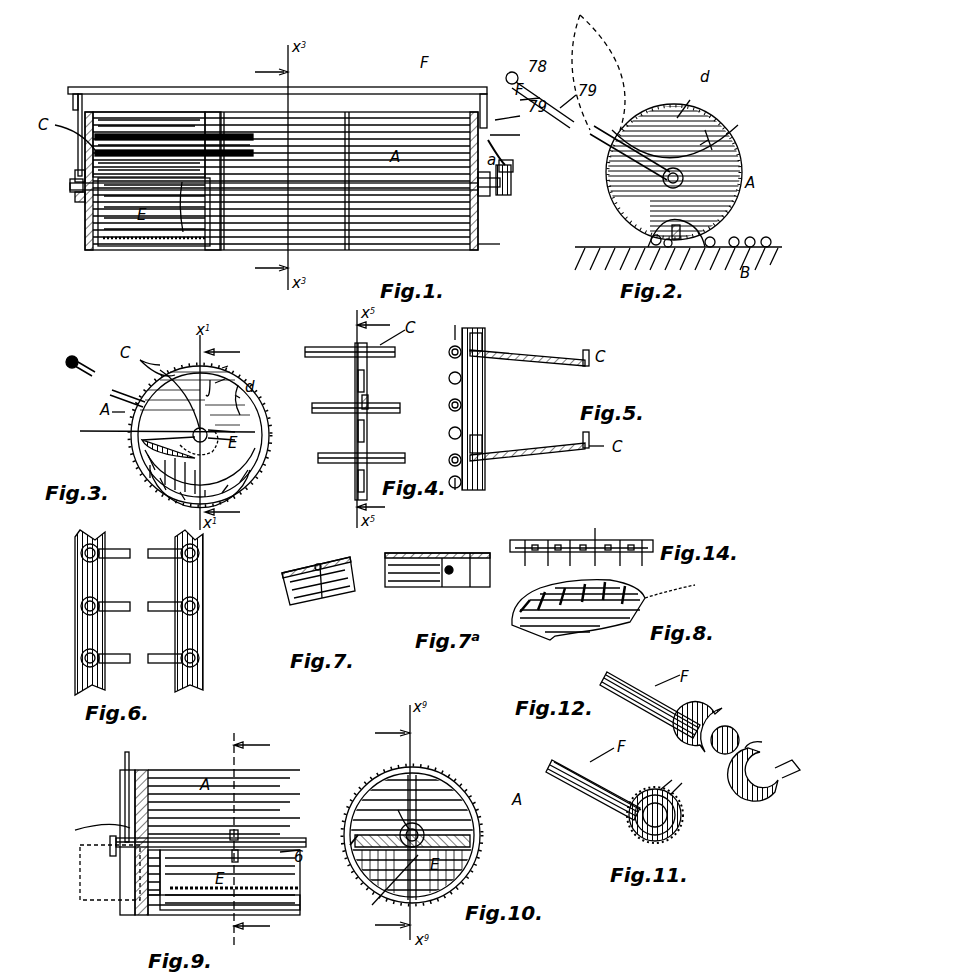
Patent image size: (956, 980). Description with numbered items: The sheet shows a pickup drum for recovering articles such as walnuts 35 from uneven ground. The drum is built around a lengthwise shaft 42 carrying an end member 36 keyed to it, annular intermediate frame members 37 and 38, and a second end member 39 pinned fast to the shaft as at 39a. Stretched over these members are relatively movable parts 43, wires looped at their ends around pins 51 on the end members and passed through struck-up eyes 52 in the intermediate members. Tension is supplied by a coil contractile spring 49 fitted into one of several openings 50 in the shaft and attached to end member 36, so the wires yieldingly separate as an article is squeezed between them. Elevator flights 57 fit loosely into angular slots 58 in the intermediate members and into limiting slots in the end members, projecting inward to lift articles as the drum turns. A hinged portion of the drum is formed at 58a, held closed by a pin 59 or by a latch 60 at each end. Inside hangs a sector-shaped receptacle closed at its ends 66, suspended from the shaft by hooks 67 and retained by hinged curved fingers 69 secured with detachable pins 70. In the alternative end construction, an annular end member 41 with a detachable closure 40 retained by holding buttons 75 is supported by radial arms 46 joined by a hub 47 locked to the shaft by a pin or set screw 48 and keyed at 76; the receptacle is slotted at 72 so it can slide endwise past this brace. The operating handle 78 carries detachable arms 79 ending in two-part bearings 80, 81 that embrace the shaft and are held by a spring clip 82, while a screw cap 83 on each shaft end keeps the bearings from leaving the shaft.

In FIG. 2, the walnuts 35 is at (650, 232).
In FIG. 1, the end member 36 is at (478, 234).
In FIG. 2, the end member 36 is at (674, 172).
In FIG. 6, the end member 36 is at (203, 635).
In FIG. 1, the intermediate frame member 37 is at (345, 250).
In FIG. 4, the intermediate frame member 37 is at (367, 440).
In FIG. 5, the intermediate frame member 37 is at (485, 390).
In FIG. 7, the intermediate frame member 37 is at (315, 600).
In FIG. 7A, the intermediate frame member 37 is at (420, 587).
In FIG. 1, the intermediate frame member 38 is at (212, 250).
In FIG. 1, the end member 39 is at (88, 250).
In FIG. 6, the end member 39 is at (75, 590).
In FIG. 14, the end member 39 is at (640, 540).
In FIG. 8, the end member 39 is at (578, 610).
In FIG. 1, the pin connection 39a is at (80, 200).
In FIG. 9, the detachable closure 40 is at (125, 805).
In FIG. 9, the end member 41 is at (140, 770).
In FIG. 1, the shaft 42 is at (170, 245).
In FIG. 2, the shaft 42 is at (663, 176).
In FIG. 3, the shaft 42 is at (151, 399).
In FIG. 9, the shaft 42 is at (153, 423).
In FIG. 10, the shaft 42 is at (400, 835).
In FIG. 12, the shaft 42 is at (730, 728).
In FIG. 11, the shaft 42 is at (662, 812).
In FIG. 1, the relatively movable parts 43 is at (425, 210).
In FIG. 4, the relatively movable parts 43 is at (335, 357).
In FIG. 5, the relatively movable parts 43 is at (454, 399).
In FIG. 6, the relatively movable parts 43 is at (125, 602).
In FIG. 14, the relatively movable parts 43 is at (578, 540).
In FIG. 9, the relatively movable parts 43 is at (265, 770).
In FIG. 10, the relatively movable parts 43 is at (430, 792).
In FIG. 9, the radial arms 46 is at (150, 870).
In FIG. 10, the radial arms 46 is at (420, 830).
In FIG. 9, the hub 47 is at (80, 870).
In FIG. 10, the hub 47 is at (470, 826).
In FIG. 10, the pin or set screw 48 is at (372, 905).
In FIG. 1, the coil contractile spring 49 is at (486, 196).
In FIG. 1, the openings 50 is at (510, 160).
In FIG. 1, the pins 51 is at (500, 249).
In FIG. 6, the pins 51 is at (85, 545).
In FIG. 4, the eyes 52 is at (364, 378).
In FIG. 5, the eyes 52 is at (448, 378).
In FIG. 2, the flights 57 is at (690, 235).
In FIG. 3, the flights 57 is at (225, 372).
In FIG. 5, the flights 57 is at (560, 352).
In FIG. 5, the slots 58 is at (482, 340).
In FIG. 10, the slots 58 is at (345, 845).
In FIG. 4, the hinge 58a is at (368, 408).
In FIG. 7, the hinge 58a is at (318, 564).
In FIG. 7A, the pin 59 is at (449, 574).
In FIG. 8, the pin 59 is at (684, 587).
In FIG. 2, the latch 60 is at (700, 128).
In FIG. 1, the end members of receptacle 66 is at (120, 250).
In FIG. 3, the end members of receptacle 66 is at (155, 480).
In FIG. 9, the end members of receptacle 66 is at (210, 862).
In FIG. 10, the end members of receptacle 66 is at (465, 862).
In FIG. 3, the hooks 67 is at (180, 400).
In FIG. 9, the hooks 67 is at (238, 835).
In FIG. 10, the hooks 67 is at (402, 822).
In FIG. 3, the hinged curved fingers 69 is at (142, 440).
In FIG. 3, the detachable pins 70 is at (203, 454).
In FIG. 9, the slot 72 is at (215, 915).
In FIG. 10, the holding buttons 75 is at (430, 968).
In FIG. 9, the key 76 is at (86, 823).
In FIG. 1, the handle member 78 is at (355, 86).
In FIG. 1, the arms 79 is at (78, 150).
In FIG. 2, the arms 79 is at (598, 72).
In FIG. 12, the arms 79 is at (680, 700).
In FIG. 11, the arms 79 is at (620, 790).
In FIG. 12, the bearing part 80 is at (700, 745).
In FIG. 11, the bearing part 80 is at (630, 818).
In FIG. 12, the bearing part 81 is at (770, 785).
In FIG. 11, the bearing part 81 is at (665, 840).
In FIG. 12, the spring clip 82 is at (782, 745).
In FIG. 11, the spring clip 82 is at (676, 790).
In FIG. 9, the screw cap 83 is at (110, 840).